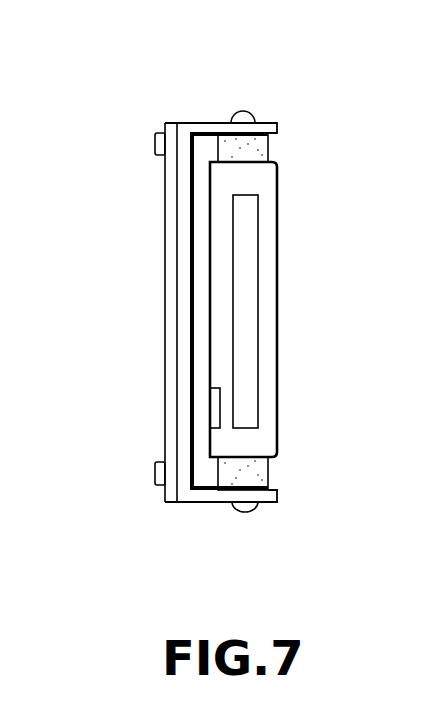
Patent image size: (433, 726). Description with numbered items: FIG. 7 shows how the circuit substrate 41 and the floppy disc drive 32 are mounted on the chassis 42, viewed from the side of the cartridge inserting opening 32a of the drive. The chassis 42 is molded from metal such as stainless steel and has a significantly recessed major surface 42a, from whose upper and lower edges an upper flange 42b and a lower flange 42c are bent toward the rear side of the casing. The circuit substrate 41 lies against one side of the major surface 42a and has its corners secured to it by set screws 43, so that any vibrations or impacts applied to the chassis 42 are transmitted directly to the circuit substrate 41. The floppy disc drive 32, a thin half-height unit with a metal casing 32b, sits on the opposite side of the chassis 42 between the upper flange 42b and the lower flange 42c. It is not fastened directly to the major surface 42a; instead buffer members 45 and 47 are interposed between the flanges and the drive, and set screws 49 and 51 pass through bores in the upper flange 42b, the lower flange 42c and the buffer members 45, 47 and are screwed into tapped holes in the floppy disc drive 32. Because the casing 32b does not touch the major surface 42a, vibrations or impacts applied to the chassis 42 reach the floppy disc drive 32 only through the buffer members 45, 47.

The floppy disc drive 32 is at (268, 190).
The cartridge inserting opening 32a is at (248, 265).
The casing 32b is at (206, 326).
The circuit substrate 41 is at (165, 167).
The chassis 42 is at (183, 133).
The major surface 42a is at (195, 270).
The upper flange 42b is at (207, 125).
The lower flange 42c is at (205, 497).
The set screws 43 is at (155, 145).
The buffer member 45 is at (267, 150).
The buffer member 47 is at (268, 468).
The set screw 49 is at (250, 113).
The set screw 51 is at (250, 510).